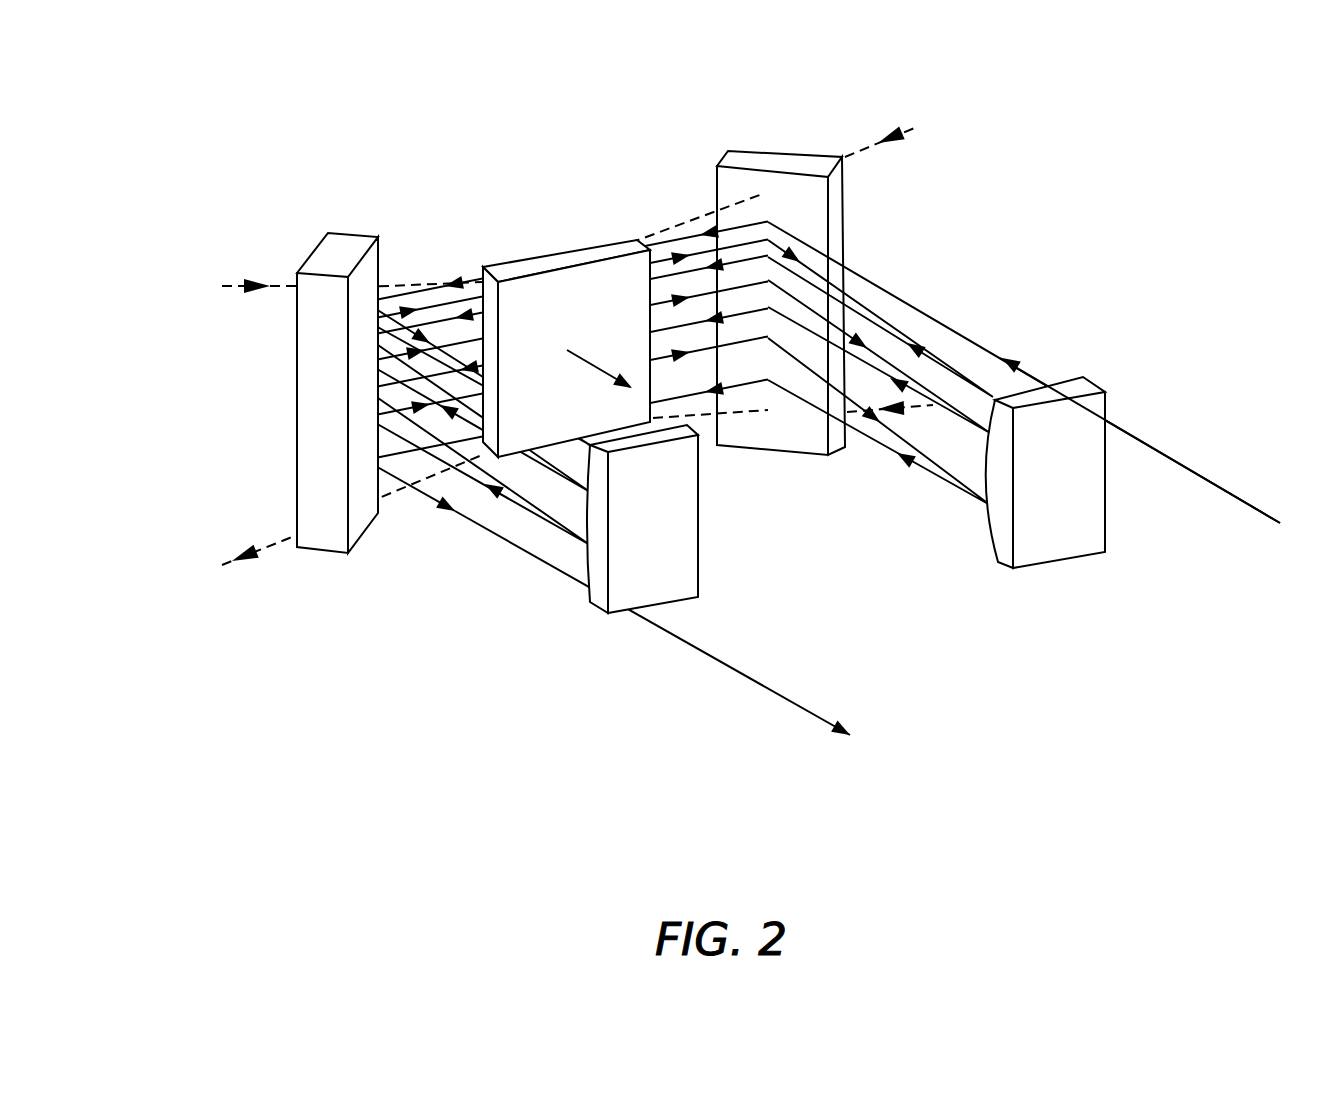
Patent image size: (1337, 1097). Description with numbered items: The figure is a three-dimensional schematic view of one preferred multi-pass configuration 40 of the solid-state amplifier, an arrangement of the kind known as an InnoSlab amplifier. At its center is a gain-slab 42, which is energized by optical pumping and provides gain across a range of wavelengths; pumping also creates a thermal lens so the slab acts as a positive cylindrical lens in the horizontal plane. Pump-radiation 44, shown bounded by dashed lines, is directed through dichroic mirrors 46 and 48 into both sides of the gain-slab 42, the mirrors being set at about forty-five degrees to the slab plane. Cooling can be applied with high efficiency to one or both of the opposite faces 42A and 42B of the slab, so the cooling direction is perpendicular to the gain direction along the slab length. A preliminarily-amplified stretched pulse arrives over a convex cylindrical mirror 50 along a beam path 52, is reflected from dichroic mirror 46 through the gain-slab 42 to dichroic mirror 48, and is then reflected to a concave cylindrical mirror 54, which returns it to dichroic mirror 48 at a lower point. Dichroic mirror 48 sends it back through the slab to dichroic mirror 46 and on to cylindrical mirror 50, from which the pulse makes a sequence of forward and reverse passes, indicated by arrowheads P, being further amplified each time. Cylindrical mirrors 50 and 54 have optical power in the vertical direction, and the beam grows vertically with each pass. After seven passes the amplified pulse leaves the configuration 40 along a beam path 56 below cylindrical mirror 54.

The multi-pass configuration 40 is at (465, 739).
The gain-slab 42 is at (538, 301).
The face of the slab 42A is at (580, 262).
The face of the slab 42B is at (515, 258).
The pump-radiation 44 is at (250, 280).
The dichroic mirror 46 is at (767, 155).
The dichroic mirror 48 is at (320, 245).
The convex cylindrical mirror 50 is at (1003, 558).
The beam path 52 is at (960, 330).
The concave cylindrical mirror 54 is at (591, 603).
The beam path 56 is at (521, 553).
The arrowheads P is at (1010, 357).